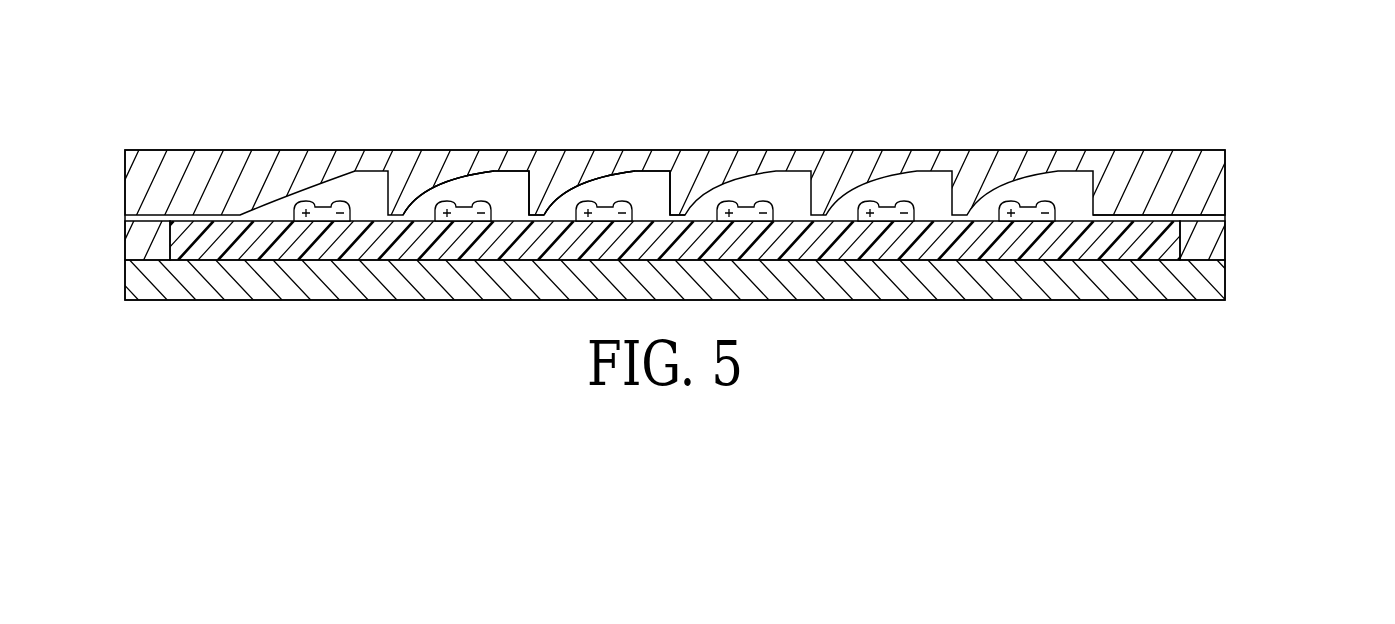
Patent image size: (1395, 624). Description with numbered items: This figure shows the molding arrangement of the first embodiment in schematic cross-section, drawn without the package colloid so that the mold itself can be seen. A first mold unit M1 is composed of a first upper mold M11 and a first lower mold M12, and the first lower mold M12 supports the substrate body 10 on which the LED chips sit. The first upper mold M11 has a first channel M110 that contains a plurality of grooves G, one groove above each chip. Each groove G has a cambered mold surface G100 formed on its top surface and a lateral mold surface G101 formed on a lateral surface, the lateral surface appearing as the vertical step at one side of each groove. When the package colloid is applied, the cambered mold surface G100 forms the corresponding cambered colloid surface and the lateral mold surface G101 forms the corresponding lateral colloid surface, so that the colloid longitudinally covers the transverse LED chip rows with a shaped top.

The first mold unit M1 is at (1227, 82).
The first upper mold M11 is at (1138, 167).
The first lower mold M12 is at (1209, 267).
The first channel M110 is at (1220, 218).
The groove G is at (652, 182).
The cambered mold surface G100 is at (630, 175).
The lateral mold surface G101 is at (684, 188).
The substrate body 10 is at (937, 221).